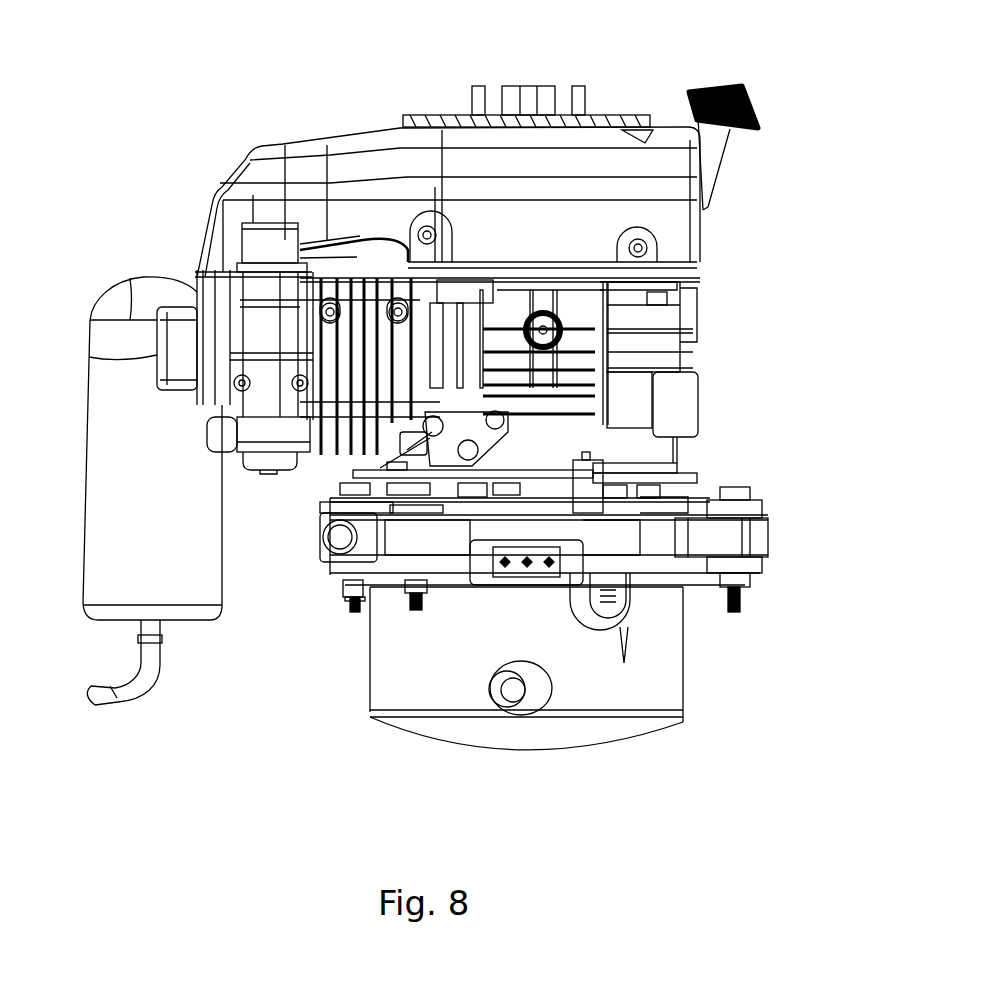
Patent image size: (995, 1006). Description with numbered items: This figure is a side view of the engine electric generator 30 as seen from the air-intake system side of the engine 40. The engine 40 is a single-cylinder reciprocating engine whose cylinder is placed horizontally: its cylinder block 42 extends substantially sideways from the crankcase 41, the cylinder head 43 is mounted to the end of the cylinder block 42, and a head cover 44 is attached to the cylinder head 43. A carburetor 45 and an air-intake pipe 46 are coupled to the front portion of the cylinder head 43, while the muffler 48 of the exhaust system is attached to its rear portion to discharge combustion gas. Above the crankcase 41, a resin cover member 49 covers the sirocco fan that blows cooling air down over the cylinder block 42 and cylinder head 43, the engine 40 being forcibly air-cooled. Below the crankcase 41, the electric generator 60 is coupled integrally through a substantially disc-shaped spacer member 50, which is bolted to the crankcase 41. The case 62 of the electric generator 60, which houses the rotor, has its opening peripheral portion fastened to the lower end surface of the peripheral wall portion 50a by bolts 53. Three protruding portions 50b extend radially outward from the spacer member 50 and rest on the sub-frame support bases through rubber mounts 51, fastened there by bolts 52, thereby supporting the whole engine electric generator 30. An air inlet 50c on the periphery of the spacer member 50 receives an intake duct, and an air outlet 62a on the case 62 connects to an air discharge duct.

The engine electric generator 30 is at (218, 130).
The engine 40 is at (687, 343).
The crankcase 41 is at (663, 362).
The cylinder block 42 is at (323, 452).
The cylinder head 43 is at (217, 423).
The head cover 44 is at (167, 350).
The carburetor 45 is at (247, 455).
The air-intake pipe 46 is at (253, 242).
The muffler 48 is at (107, 325).
The cover member 49 is at (313, 138).
The spacer member 50 is at (690, 511).
The peripheral wall portion 50a is at (637, 543).
The protruding portions 50b is at (340, 540).
The air inlet 50c is at (353, 603).
The rubber mounts 51 is at (340, 507).
The bolts 52 is at (410, 605).
The bolts 53 is at (640, 582).
The electric generator 60 is at (683, 694).
The case 62 is at (547, 752).
The air outlet 62a is at (507, 697).